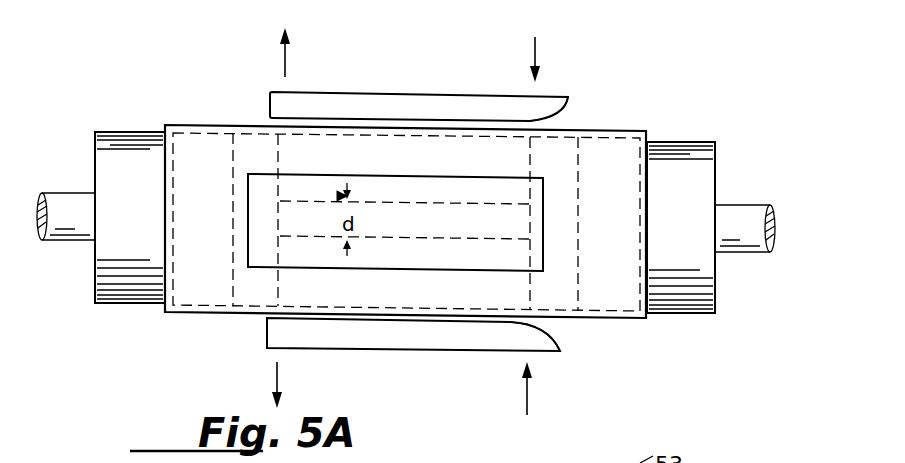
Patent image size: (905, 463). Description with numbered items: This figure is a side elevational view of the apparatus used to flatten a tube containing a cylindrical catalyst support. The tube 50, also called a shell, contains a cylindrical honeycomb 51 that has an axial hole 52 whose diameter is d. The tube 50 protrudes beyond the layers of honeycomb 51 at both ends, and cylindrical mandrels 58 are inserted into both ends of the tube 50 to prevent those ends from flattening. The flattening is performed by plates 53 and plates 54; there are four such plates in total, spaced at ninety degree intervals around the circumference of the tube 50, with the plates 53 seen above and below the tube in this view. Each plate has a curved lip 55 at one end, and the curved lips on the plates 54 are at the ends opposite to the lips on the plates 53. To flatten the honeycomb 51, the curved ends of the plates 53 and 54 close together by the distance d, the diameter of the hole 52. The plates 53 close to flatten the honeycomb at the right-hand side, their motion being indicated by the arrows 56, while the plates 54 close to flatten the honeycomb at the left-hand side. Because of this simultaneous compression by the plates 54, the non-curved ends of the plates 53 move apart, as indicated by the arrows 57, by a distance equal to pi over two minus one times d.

The tube 50 is at (610, 128).
The cylindrical honeycomb 51 is at (276, 290).
The axial hole 52 is at (420, 239).
The plates 53 is at (432, 93).
The plates 54 is at (425, 176).
The curved lip 55 is at (566, 101).
The arrows 56 is at (538, 50).
The arrows 57 is at (282, 60).
The cylindrical mandrels 58 is at (125, 128).